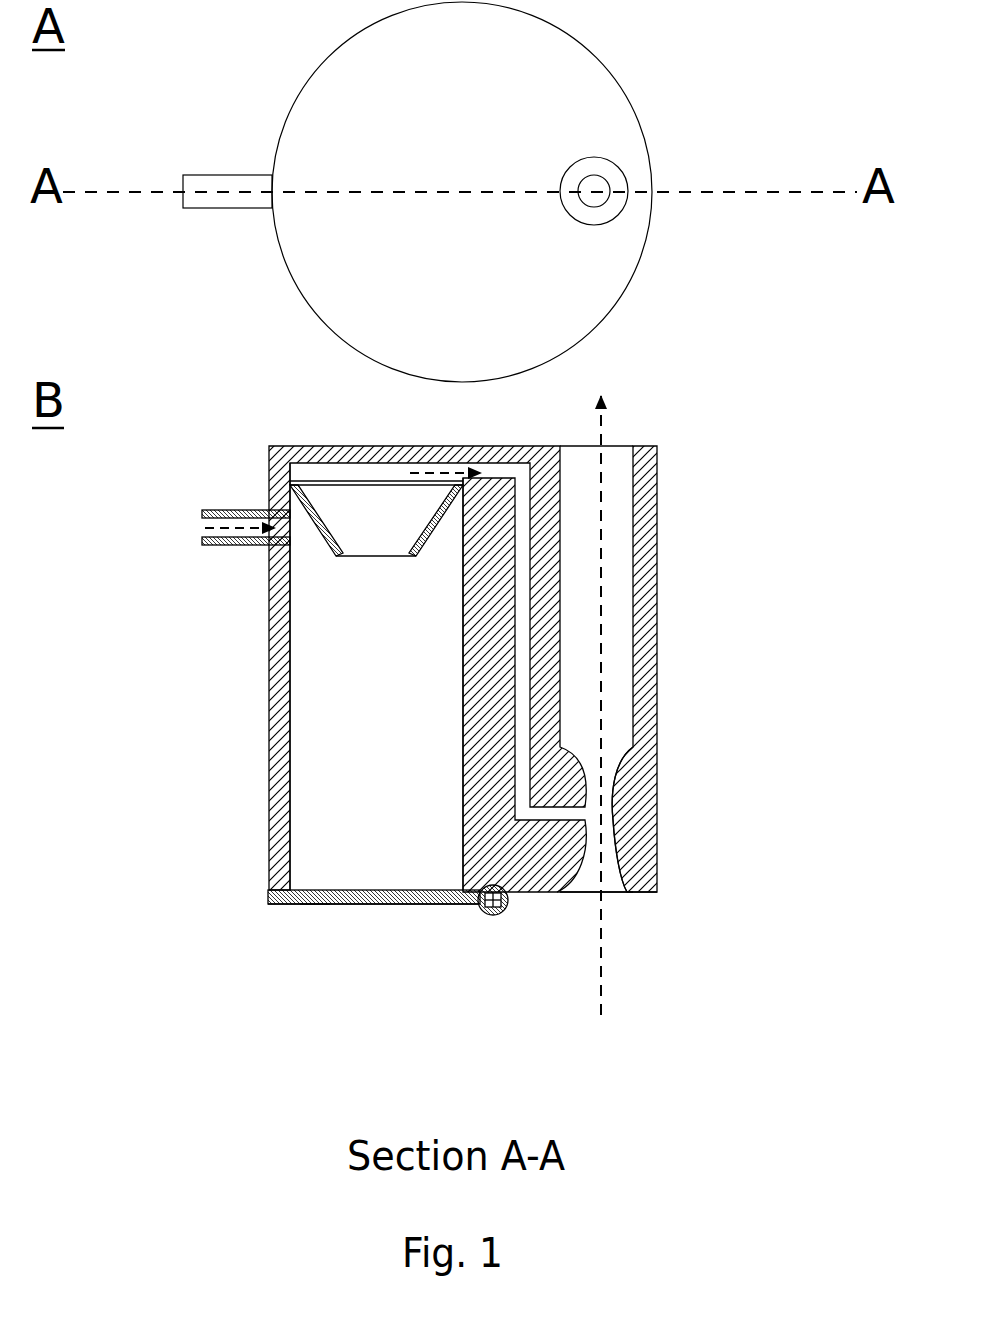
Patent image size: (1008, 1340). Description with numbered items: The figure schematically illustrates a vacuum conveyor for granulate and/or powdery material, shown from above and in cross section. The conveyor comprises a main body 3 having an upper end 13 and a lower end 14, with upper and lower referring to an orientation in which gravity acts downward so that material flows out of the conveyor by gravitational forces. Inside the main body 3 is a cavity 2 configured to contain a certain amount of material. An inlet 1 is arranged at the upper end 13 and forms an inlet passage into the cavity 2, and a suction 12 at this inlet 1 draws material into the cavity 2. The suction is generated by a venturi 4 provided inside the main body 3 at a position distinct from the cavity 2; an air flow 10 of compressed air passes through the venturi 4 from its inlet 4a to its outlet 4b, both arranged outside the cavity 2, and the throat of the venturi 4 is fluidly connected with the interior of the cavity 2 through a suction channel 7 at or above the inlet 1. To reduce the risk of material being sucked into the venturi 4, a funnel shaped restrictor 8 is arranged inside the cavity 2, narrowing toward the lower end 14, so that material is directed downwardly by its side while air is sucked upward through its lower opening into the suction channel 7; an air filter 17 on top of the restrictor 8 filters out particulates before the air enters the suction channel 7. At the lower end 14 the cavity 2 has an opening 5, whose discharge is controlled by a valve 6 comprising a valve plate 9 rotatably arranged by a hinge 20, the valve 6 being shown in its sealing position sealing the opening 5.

The inlet 1 is at (193, 532).
The cavity 2 is at (348, 695).
The main body 3 is at (695, 578).
The venturi 4 is at (618, 810).
The inlet of venturi 4a is at (610, 878).
The outlet of venturi 4b is at (613, 448).
The opening 5 is at (375, 882).
The valve 6 is at (327, 933).
The suction channel 7 is at (515, 593).
The restrictor 8 is at (322, 548).
The valve plate 9 is at (300, 903).
The air flow 10 is at (617, 957).
The suction 12 is at (420, 473).
The upper end 13 is at (655, 393).
The lower end 14 is at (420, 952).
The air filter 17 is at (452, 485).
The hinge 20 is at (493, 922).